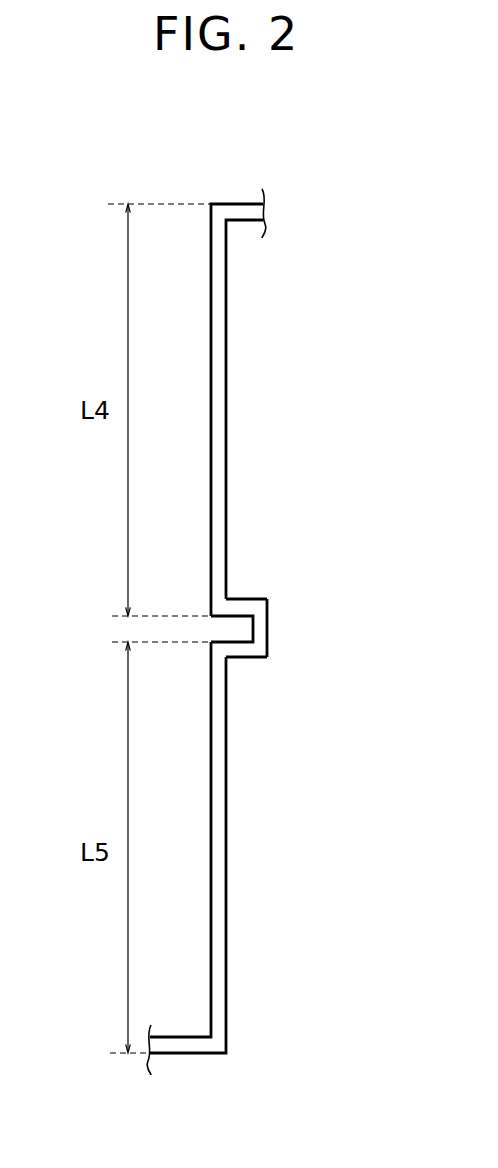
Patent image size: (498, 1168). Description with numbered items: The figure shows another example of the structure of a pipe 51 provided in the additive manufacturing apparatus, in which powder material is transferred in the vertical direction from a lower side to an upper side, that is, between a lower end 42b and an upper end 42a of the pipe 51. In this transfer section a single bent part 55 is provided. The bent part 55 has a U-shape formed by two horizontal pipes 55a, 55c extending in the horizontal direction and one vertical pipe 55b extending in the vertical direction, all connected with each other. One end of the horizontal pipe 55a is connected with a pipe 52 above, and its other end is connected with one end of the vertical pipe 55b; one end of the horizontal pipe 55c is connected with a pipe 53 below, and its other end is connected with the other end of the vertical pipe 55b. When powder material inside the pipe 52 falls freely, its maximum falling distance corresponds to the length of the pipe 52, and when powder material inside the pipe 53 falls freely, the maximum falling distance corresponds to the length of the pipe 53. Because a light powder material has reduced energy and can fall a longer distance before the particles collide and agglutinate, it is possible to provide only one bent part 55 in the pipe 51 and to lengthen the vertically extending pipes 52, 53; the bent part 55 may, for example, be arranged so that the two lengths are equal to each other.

The pipe 51 is at (251, 626).
The pipe 52 is at (227, 375).
The pipe 53 is at (227, 820).
The upper end 42a is at (229, 200).
The lower end 42b is at (198, 1057).
The bent part 55 is at (283, 627).
The horizontal pipe 55a is at (259, 597).
The vertical pipe 55b is at (269, 628).
The horizontal pipe 55c is at (258, 659).